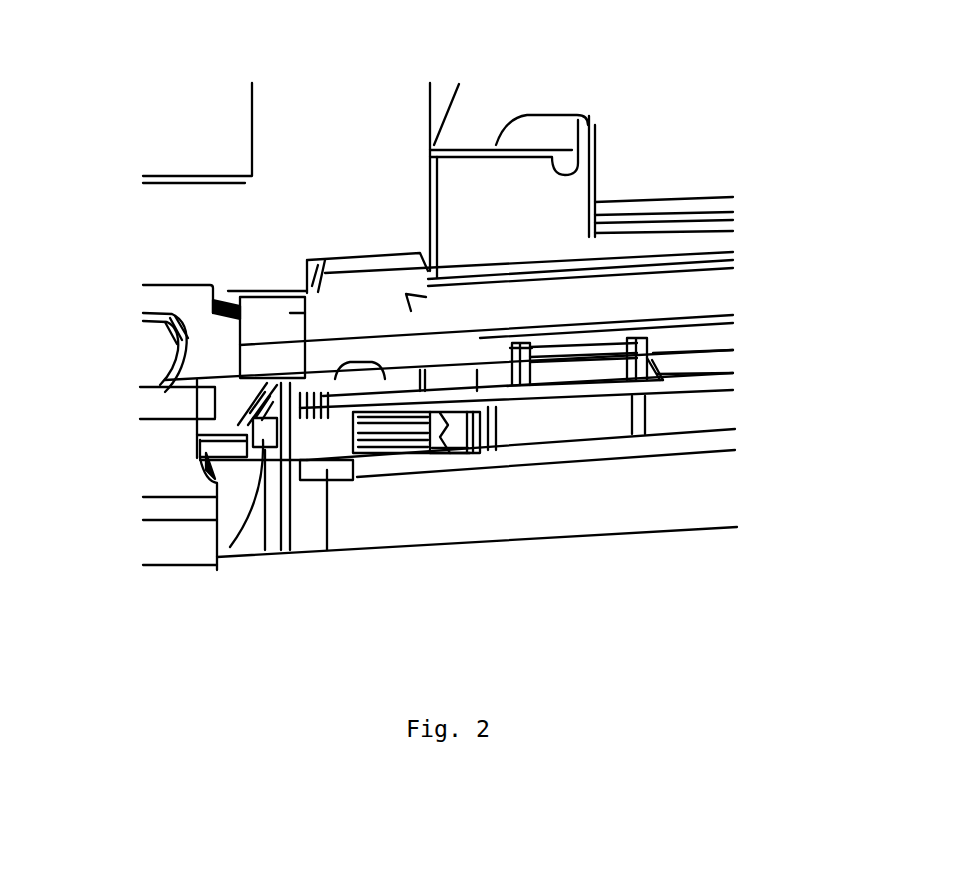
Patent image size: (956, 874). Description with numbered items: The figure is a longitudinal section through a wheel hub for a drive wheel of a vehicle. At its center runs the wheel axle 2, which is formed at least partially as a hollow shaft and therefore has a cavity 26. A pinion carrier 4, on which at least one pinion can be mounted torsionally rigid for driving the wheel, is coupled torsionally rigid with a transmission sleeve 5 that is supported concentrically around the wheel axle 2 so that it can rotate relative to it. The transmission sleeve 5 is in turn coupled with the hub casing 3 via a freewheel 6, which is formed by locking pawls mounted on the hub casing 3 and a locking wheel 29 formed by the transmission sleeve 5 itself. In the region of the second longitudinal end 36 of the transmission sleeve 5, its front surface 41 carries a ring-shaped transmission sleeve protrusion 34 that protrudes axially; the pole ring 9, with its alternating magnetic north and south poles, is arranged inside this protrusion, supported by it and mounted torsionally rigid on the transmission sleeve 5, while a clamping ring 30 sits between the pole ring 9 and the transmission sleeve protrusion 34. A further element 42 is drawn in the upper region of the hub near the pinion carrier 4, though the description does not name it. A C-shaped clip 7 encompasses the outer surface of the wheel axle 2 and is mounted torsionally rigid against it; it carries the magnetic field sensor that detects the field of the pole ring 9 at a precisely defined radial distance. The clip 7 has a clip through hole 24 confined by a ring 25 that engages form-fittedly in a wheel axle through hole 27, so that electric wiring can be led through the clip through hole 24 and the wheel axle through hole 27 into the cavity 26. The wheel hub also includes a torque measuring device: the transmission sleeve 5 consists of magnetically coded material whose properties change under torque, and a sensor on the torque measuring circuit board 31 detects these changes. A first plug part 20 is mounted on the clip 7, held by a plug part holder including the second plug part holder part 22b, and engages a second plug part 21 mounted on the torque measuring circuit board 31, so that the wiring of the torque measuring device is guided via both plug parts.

The wheel axle 2 is at (713, 482).
The hub casing 3 is at (323, 150).
The pinion carrier 4 is at (623, 213).
The transmission sleeve 5 is at (713, 290).
The freewheel 6 is at (406, 294).
The clip 7 is at (243, 433).
The pole ring 9 is at (306, 327).
The first plug part 20 is at (353, 443).
The second plug part 21 is at (430, 453).
The second plug part holder part 22b is at (230, 547).
The clip through hole 24 is at (275, 520).
The ring 25 is at (333, 523).
The cavity 26 is at (718, 552).
The wheel axle through hole 27 is at (215, 520).
The locking wheel 29 is at (360, 260).
The clamping ring 30 is at (240, 321).
The torque measuring circuit board 31 is at (717, 382).
The transmission sleeve protrusion 34 is at (277, 282).
The second longitudinal end 36 is at (238, 282).
The front surface 41 is at (213, 305).
The retaining clip 42 is at (492, 270).